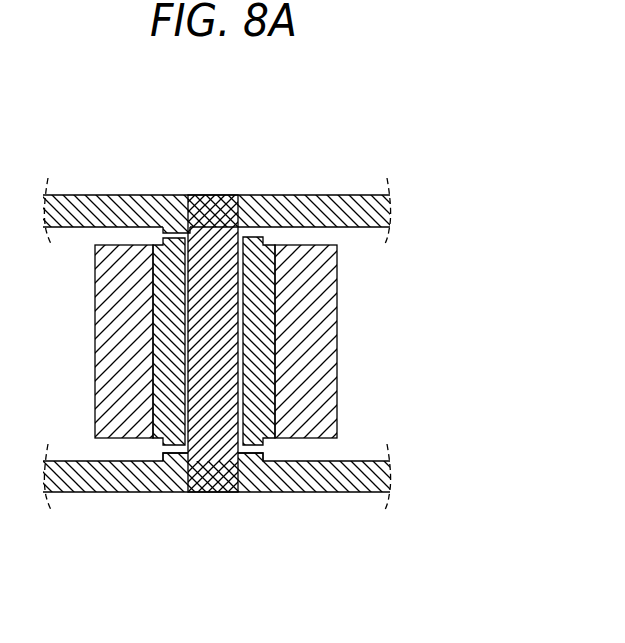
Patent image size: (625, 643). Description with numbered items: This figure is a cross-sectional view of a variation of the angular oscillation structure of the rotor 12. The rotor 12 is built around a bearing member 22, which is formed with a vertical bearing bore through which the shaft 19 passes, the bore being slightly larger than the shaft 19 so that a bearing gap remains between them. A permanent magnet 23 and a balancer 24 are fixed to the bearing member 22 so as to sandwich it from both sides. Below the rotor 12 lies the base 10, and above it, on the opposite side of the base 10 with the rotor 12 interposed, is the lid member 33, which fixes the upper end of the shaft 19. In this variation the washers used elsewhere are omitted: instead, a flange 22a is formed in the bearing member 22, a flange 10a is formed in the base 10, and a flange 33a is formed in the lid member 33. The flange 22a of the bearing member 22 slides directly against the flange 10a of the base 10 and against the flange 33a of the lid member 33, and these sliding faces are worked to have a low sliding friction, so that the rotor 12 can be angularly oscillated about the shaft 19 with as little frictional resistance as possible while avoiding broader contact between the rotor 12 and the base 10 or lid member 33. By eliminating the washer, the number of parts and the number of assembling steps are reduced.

The base 10 is at (308, 481).
The flange 10a is at (255, 493).
The rotor 12 is at (425, 302).
The shaft 19 is at (218, 197).
The bearing member 22 is at (267, 378).
The flange 22a is at (162, 231).
The permanent magnet 23 is at (105, 343).
The balancer 24 is at (325, 333).
The lid member 33 is at (313, 202).
The flange 33a is at (178, 229).